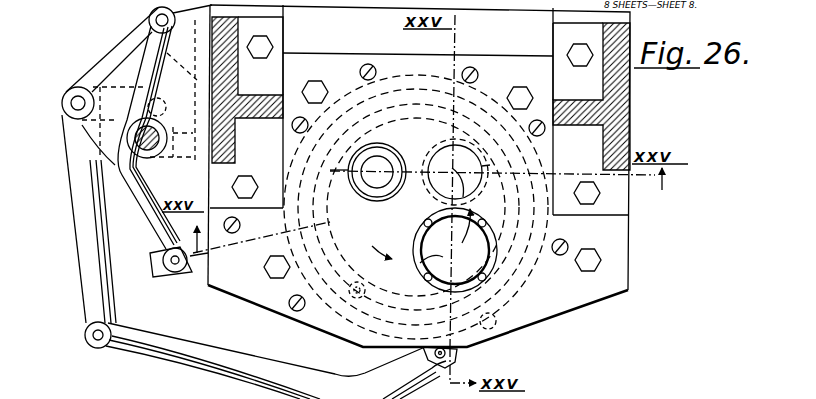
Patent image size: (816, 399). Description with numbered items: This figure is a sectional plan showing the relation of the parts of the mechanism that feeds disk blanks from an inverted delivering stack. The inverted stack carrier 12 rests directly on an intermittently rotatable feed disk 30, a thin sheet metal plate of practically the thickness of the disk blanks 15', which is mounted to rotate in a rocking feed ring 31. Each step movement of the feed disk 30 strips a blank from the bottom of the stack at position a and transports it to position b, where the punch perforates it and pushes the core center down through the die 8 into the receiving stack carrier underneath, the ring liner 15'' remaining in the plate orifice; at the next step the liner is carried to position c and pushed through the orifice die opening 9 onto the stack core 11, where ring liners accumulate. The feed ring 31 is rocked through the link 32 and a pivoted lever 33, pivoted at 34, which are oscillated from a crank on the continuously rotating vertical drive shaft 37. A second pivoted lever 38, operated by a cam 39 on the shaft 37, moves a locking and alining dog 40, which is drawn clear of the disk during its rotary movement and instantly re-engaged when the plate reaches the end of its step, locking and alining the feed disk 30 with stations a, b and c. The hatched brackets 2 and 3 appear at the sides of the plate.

The right bracket 2 is at (626, 100).
The left bracket 3 is at (210, 187).
The die 8 is at (462, 147).
The orifice die opening 9 is at (358, 147).
The stack core 11 is at (368, 181).
The stack carrier 12 is at (490, 251).
The disk blank 15' is at (533, 155).
The ring liner 15'' is at (362, 228).
The feed disk 30 is at (497, 290).
The feed ring 31 is at (496, 325).
The link 32 is at (264, 352).
The pivoted lever 33 is at (83, 218).
The pivot 34 is at (149, 17).
The vertical drive shaft 37 is at (137, 135).
The pivoted lever 38 is at (118, 66).
The cam 39 is at (127, 182).
The locking and alining dog 40 is at (195, 270).